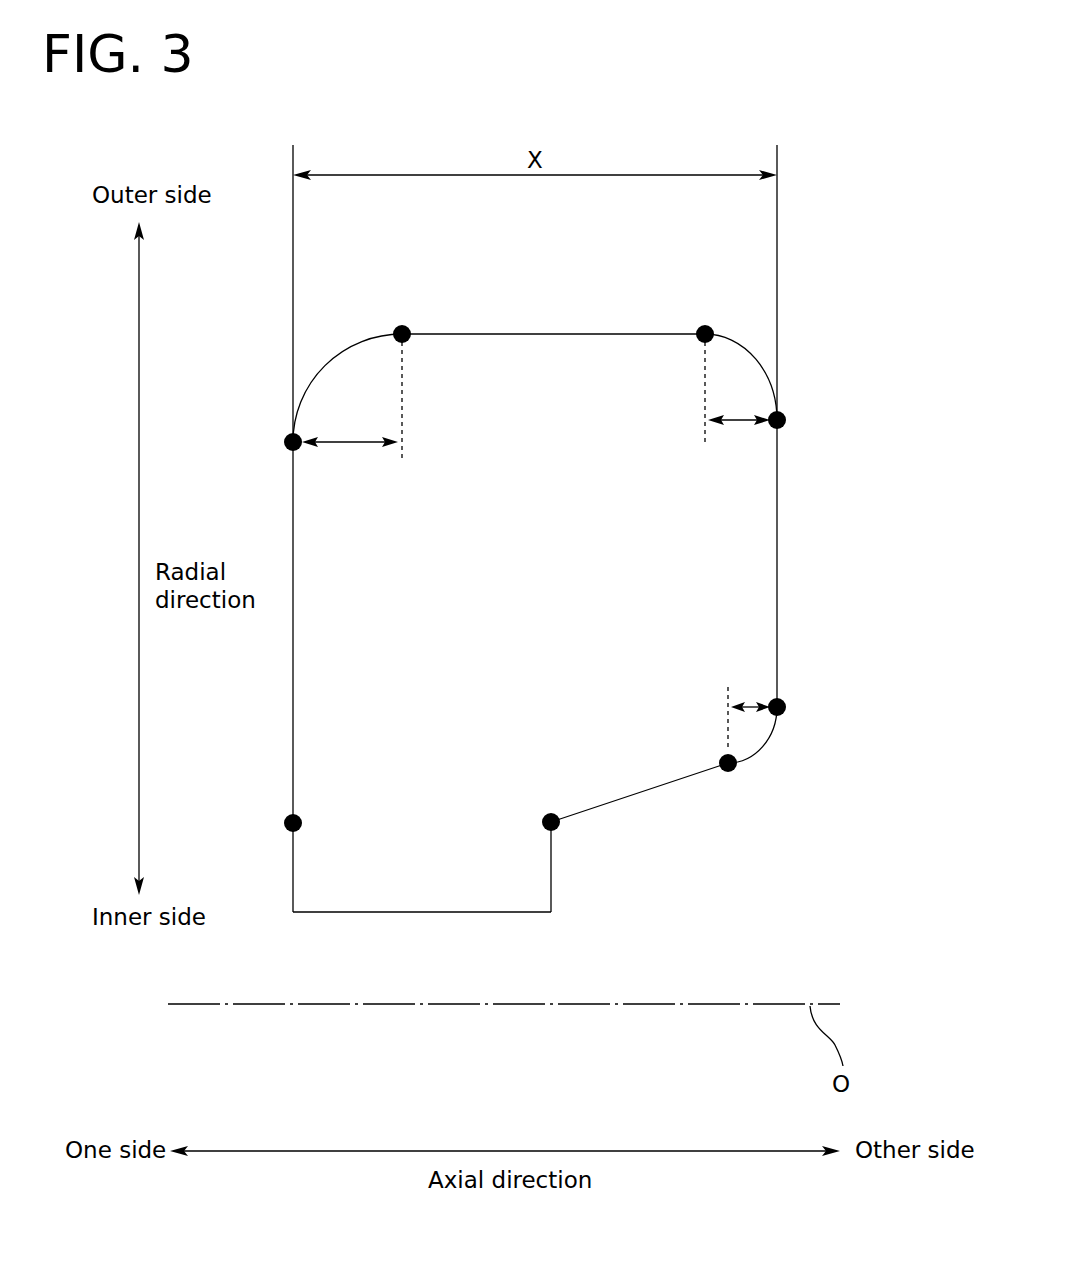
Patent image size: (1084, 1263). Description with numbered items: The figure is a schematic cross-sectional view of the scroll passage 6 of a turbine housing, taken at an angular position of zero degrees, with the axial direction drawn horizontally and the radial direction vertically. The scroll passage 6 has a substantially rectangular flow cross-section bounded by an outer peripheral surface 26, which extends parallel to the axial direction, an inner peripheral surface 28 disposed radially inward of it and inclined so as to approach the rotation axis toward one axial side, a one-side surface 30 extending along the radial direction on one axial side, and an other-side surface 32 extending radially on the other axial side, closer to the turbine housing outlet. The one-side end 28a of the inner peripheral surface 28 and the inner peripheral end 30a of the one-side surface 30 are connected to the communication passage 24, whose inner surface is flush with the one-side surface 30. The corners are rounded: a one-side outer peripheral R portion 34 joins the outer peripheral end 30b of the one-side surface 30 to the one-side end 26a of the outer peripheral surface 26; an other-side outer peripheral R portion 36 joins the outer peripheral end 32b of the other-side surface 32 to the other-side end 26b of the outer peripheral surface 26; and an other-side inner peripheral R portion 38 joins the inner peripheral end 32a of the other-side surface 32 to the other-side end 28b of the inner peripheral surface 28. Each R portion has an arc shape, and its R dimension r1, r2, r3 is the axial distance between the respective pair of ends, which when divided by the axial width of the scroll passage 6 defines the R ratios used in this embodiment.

The scroll passage 6 is at (826, 204).
The communication passage 24 is at (292, 876).
The outer peripheral surface 26 is at (563, 333).
The one-side end of the outer peripheral surface 26a is at (406, 328).
The other-side end of the outer peripheral surface 26b is at (706, 328).
The inner peripheral surface 28 is at (628, 800).
The one-side end of the inner peripheral surface 28a is at (553, 828).
The other-side end of the inner peripheral surface 28b is at (732, 770).
The one-side surface 30 is at (292, 571).
The inner peripheral end of the one-side surface 30a is at (290, 822).
The outer peripheral end of the one-side surface 30b is at (290, 441).
The other-side surface 32 is at (778, 574).
The inner peripheral end of the other-side surface 32a is at (782, 706).
The outer peripheral end of the other-side surface 32b is at (782, 418).
The one-side outer peripheral R portion 34 is at (348, 345).
The other-side outer peripheral R portion 36 is at (760, 365).
The other-side inner peripheral R portion 38 is at (765, 745).
The R dimension of the one-side outer peripheral R portion r1 is at (352, 445).
The R dimension of the other-side outer peripheral R portion r2 is at (740, 425).
The R dimension of the other-side inner peripheral R portion r3 is at (745, 703).